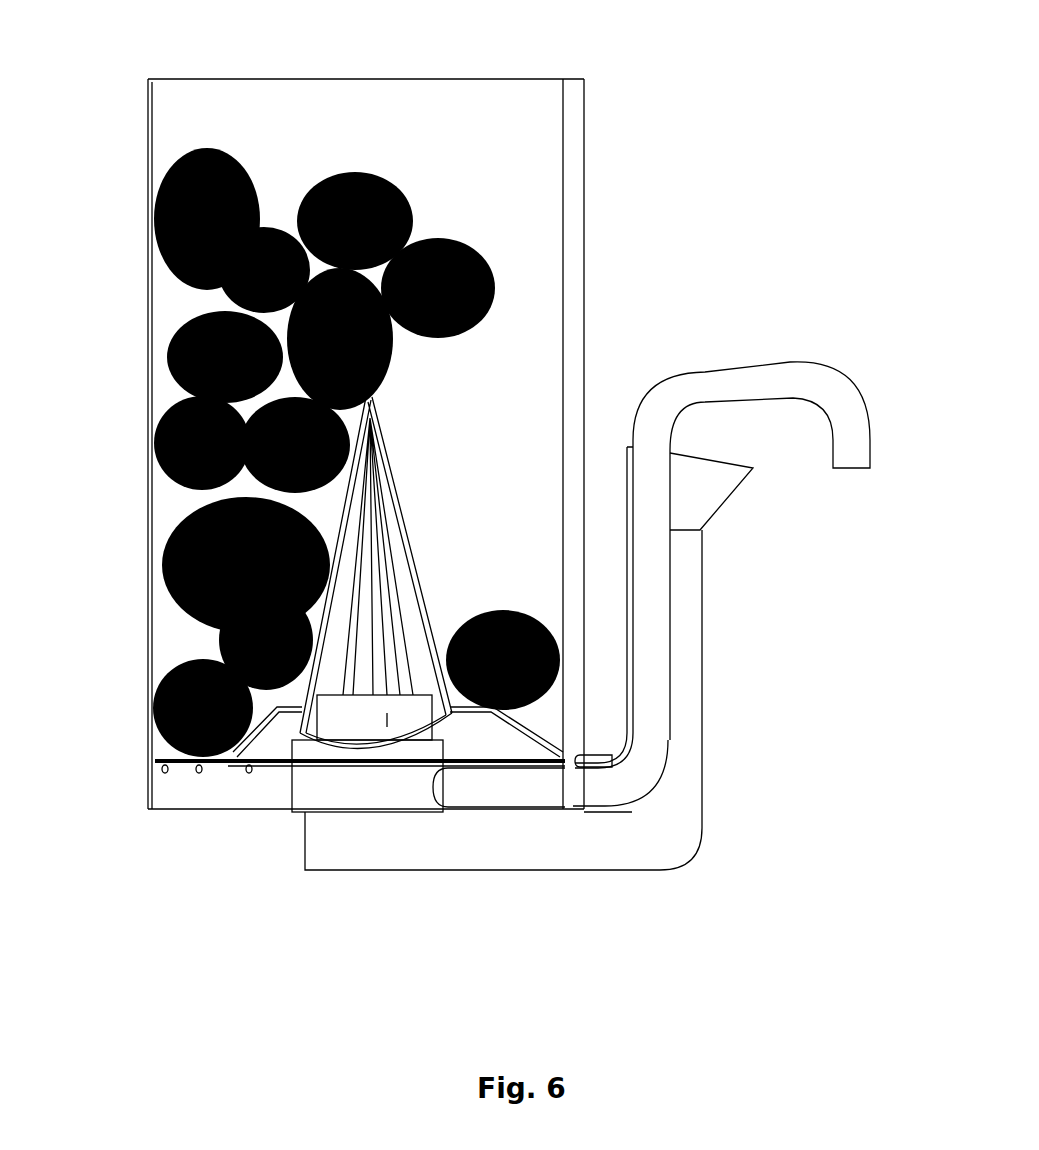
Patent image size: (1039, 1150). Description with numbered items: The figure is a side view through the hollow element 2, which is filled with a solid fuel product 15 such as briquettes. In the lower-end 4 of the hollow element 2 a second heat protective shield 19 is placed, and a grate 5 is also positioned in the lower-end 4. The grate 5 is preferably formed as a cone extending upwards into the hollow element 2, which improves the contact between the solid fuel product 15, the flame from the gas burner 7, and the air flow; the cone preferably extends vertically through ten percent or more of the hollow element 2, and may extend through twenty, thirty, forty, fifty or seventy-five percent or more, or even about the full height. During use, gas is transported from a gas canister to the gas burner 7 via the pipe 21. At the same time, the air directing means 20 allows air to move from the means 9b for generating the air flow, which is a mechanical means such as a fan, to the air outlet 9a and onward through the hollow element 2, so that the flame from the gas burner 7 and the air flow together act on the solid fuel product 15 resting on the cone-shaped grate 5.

The hollow element 2 is at (147, 337).
The lower-end 4 is at (147, 785).
The grate 5 is at (395, 482).
The gas burner 7 is at (328, 737).
The air outlet 9a is at (400, 690).
The means for generating the air flow 9b is at (720, 508).
The solid fuel product 15 is at (207, 146).
The second heat protective shield 19 is at (178, 766).
The air directing means 20 is at (680, 862).
The pipe 21 is at (826, 366).